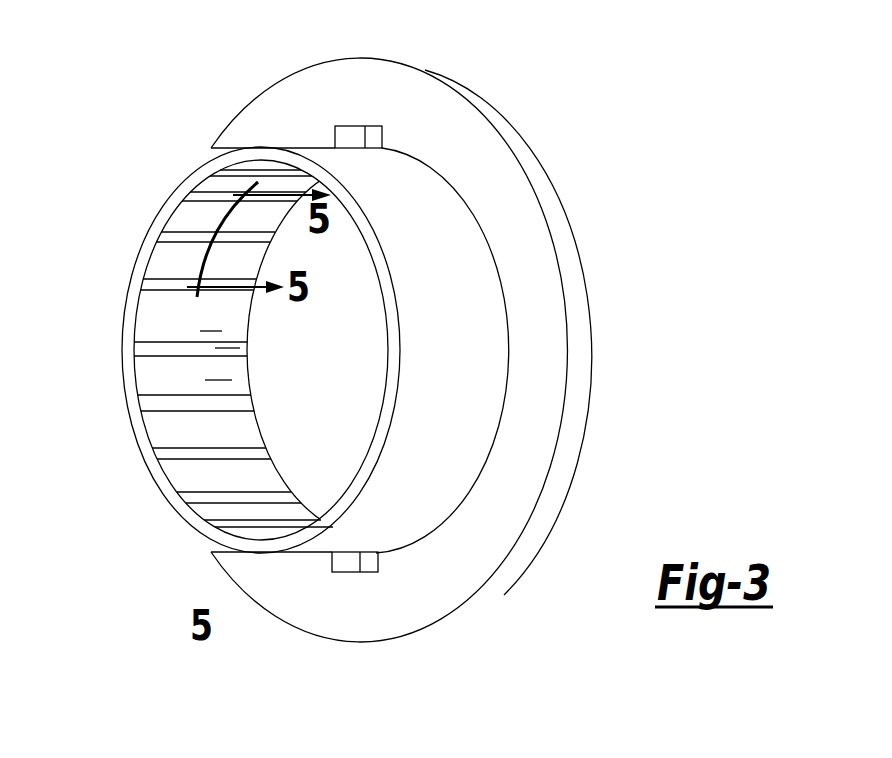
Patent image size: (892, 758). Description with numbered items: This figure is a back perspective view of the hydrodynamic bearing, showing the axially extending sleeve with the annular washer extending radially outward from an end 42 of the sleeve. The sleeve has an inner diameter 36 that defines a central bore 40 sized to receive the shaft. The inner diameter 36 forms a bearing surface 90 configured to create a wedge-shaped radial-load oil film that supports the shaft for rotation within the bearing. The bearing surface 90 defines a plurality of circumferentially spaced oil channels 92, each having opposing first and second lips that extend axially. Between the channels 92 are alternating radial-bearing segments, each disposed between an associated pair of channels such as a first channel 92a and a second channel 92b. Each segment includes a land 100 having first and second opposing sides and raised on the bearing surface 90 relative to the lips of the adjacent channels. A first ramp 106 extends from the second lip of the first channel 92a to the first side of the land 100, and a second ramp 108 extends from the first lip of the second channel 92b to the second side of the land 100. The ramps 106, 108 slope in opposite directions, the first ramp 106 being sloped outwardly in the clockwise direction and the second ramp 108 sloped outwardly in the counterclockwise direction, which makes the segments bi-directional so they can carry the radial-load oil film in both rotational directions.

The inner diameter 36 is at (405, 513).
The end 42 is at (478, 477).
The central bore 40 is at (190, 473).
The bearing surface 90 is at (267, 218).
The oil channels 92 is at (152, 403).
The first channel 92a is at (160, 292).
The second channel 92b is at (220, 196).
The land 100 is at (237, 348).
The first ramp 106 is at (230, 380).
The second ramp 108 is at (220, 331).